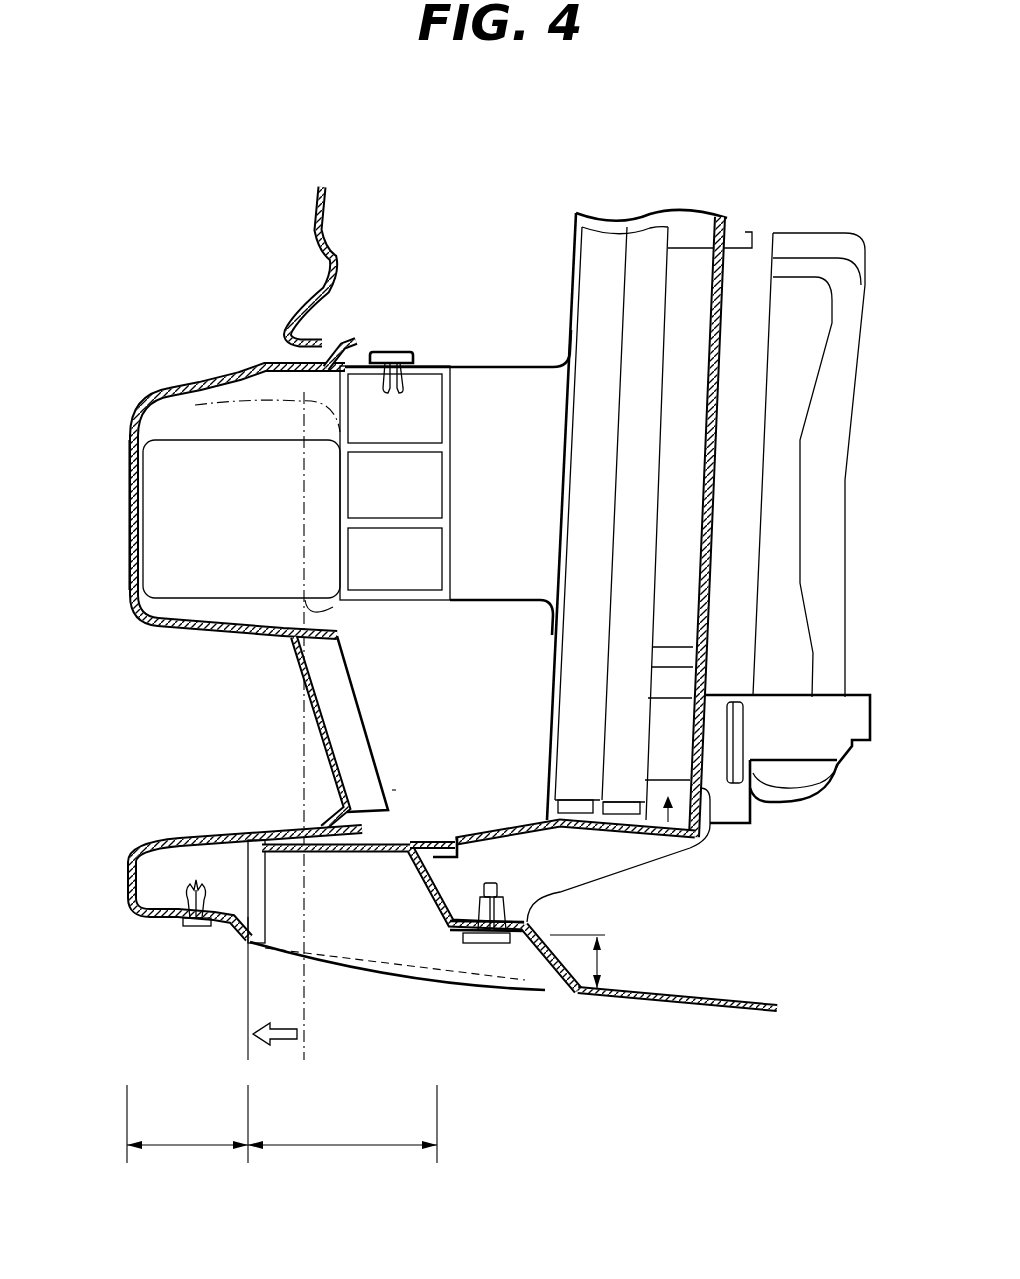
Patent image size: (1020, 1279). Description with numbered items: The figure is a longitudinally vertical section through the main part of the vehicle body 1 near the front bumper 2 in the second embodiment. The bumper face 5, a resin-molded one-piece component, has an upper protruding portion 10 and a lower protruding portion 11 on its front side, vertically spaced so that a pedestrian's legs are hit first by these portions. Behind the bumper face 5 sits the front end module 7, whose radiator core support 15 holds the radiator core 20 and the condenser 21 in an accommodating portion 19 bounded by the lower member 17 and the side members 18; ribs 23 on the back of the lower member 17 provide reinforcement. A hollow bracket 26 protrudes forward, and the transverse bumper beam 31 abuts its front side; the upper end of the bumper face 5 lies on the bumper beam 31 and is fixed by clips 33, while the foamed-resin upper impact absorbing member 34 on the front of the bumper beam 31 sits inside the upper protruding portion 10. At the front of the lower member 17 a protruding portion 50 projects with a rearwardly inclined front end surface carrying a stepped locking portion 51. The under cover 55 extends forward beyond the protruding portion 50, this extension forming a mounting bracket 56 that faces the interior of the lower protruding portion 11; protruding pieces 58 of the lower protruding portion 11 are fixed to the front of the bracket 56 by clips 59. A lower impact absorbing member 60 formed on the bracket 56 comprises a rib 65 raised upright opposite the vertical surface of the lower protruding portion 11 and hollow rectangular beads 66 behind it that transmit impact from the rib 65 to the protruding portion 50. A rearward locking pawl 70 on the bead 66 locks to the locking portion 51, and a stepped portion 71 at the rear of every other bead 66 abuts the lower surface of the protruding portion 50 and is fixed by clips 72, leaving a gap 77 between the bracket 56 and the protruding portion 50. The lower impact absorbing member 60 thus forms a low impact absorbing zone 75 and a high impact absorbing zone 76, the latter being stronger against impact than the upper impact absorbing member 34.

The vehicle body 1 is at (793, 144).
The front bumper 2 is at (136, 388).
The bumper face 5 is at (234, 378).
The front end module 7 is at (739, 182).
The upper protruding portion 10 is at (128, 512).
The lower protruding portion 11 is at (130, 867).
The radiator core support 15 is at (745, 500).
The lower member 17 is at (588, 838).
The side member 18 is at (690, 232).
The accommodating portion 19 is at (673, 845).
The radiator core 20 is at (650, 235).
The condenser 21 is at (603, 215).
The rib 23 is at (630, 856).
The hollow bracket 26 is at (500, 400).
The bumper beam 31 is at (441, 368).
The clip 33 is at (391, 352).
The upper impact absorbing member 34 is at (185, 462).
The protruding portion 50 is at (500, 830).
The stepped locking portion 51 is at (470, 950).
The under cover 55 is at (722, 1015).
The mounting bracket 56 is at (347, 990).
The protruding piece 58 is at (176, 925).
The clip 59 is at (198, 930).
The lower impact absorbing member 60 is at (400, 814).
The rib 65 is at (257, 838).
The bead 66 is at (393, 853).
The locking pawl 70 is at (440, 840).
The stepped portion 71 is at (550, 965).
The clip 72 is at (490, 950).
The low impact absorbing zone 75 is at (178, 1150).
The high impact absorbing zone 76 is at (345, 1150).
The gap 77 is at (600, 962).